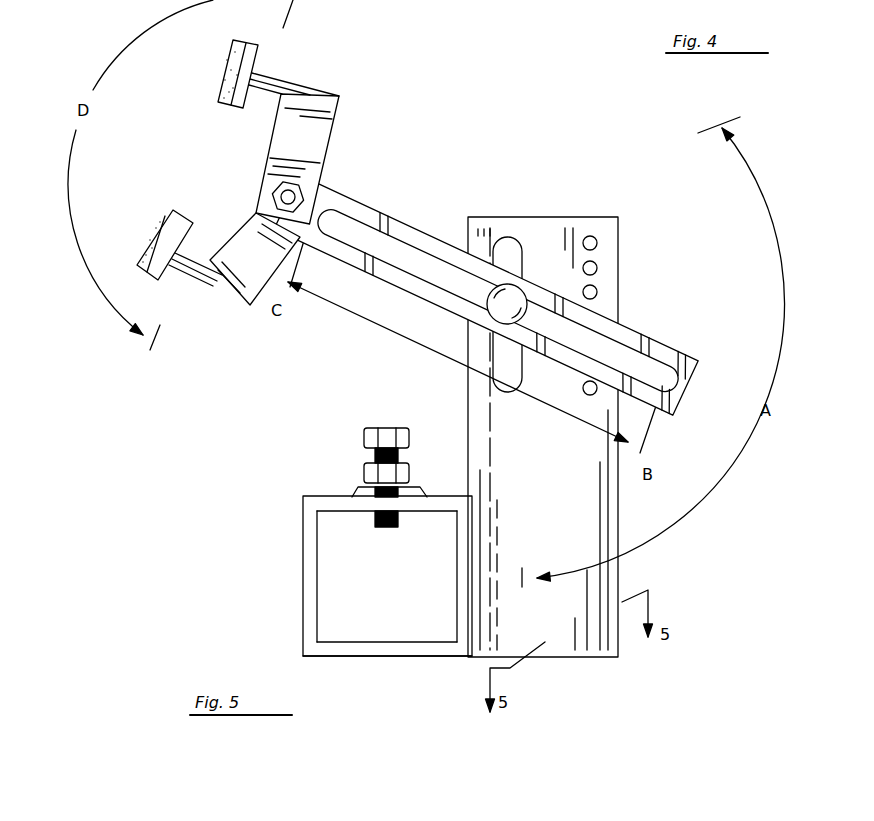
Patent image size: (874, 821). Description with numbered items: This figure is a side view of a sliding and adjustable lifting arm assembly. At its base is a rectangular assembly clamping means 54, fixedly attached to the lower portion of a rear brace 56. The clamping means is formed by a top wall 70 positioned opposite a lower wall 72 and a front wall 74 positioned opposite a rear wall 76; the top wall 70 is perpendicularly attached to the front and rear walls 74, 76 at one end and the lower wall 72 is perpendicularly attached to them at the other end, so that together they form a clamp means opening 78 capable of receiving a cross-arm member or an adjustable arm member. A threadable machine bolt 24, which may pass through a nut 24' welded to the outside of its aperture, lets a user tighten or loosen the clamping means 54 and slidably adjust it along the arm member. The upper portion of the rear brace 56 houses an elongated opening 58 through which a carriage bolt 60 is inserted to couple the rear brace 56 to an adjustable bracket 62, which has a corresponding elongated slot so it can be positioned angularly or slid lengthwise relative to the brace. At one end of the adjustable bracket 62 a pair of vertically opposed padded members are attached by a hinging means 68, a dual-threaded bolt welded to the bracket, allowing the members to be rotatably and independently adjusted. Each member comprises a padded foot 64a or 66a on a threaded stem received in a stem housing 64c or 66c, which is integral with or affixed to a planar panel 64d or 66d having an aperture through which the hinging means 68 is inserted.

The threadable machine bolt 24 is at (371, 470).
The welded nut 24' is at (362, 466).
The rectangular assembly clamping means 54 is at (303, 497).
The rear brace 56 is at (587, 523).
The elongated opening 58 is at (508, 358).
The carriage bolt 60 is at (503, 295).
The adjustable bracket 62 is at (640, 335).
The padded foot 64a is at (223, 78).
The stem housing 64c is at (293, 78).
The planar panel 64d is at (325, 137).
The padded foot 66a is at (157, 232).
The stem housing 66c is at (217, 277).
The planar panel 66d is at (247, 223).
The hinging means 68 is at (272, 190).
The top wall 70 is at (433, 512).
The lower wall 72 is at (418, 641).
The front wall 74 is at (322, 579).
The rear wall 76 is at (457, 592).
The clamp means opening 78 is at (352, 623).